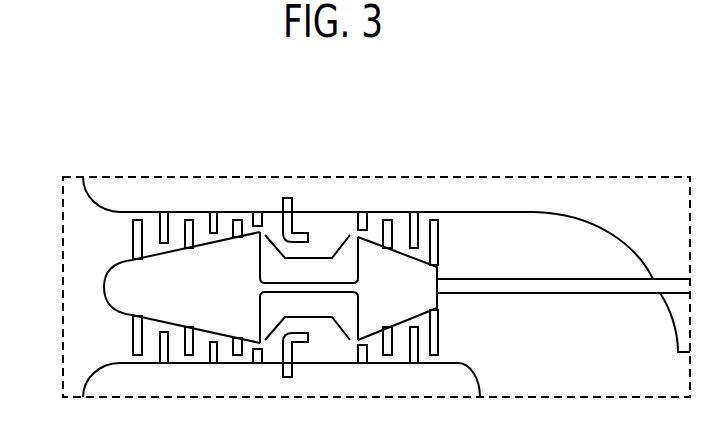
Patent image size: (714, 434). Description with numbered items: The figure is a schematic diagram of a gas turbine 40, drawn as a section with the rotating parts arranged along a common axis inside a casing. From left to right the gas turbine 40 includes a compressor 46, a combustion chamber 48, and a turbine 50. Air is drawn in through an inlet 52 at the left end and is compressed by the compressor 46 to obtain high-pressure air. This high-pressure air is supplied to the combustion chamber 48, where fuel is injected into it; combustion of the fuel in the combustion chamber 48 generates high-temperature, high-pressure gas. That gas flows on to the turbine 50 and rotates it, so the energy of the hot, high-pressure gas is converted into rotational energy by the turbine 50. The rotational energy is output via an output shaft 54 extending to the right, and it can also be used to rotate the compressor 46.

The gas turbine 40 is at (228, 93).
The compressor 46 is at (173, 262).
The combustion chamber 48 is at (315, 268).
The turbine 50 is at (402, 267).
The inlet 52 is at (88, 383).
The output shaft 54 is at (477, 280).